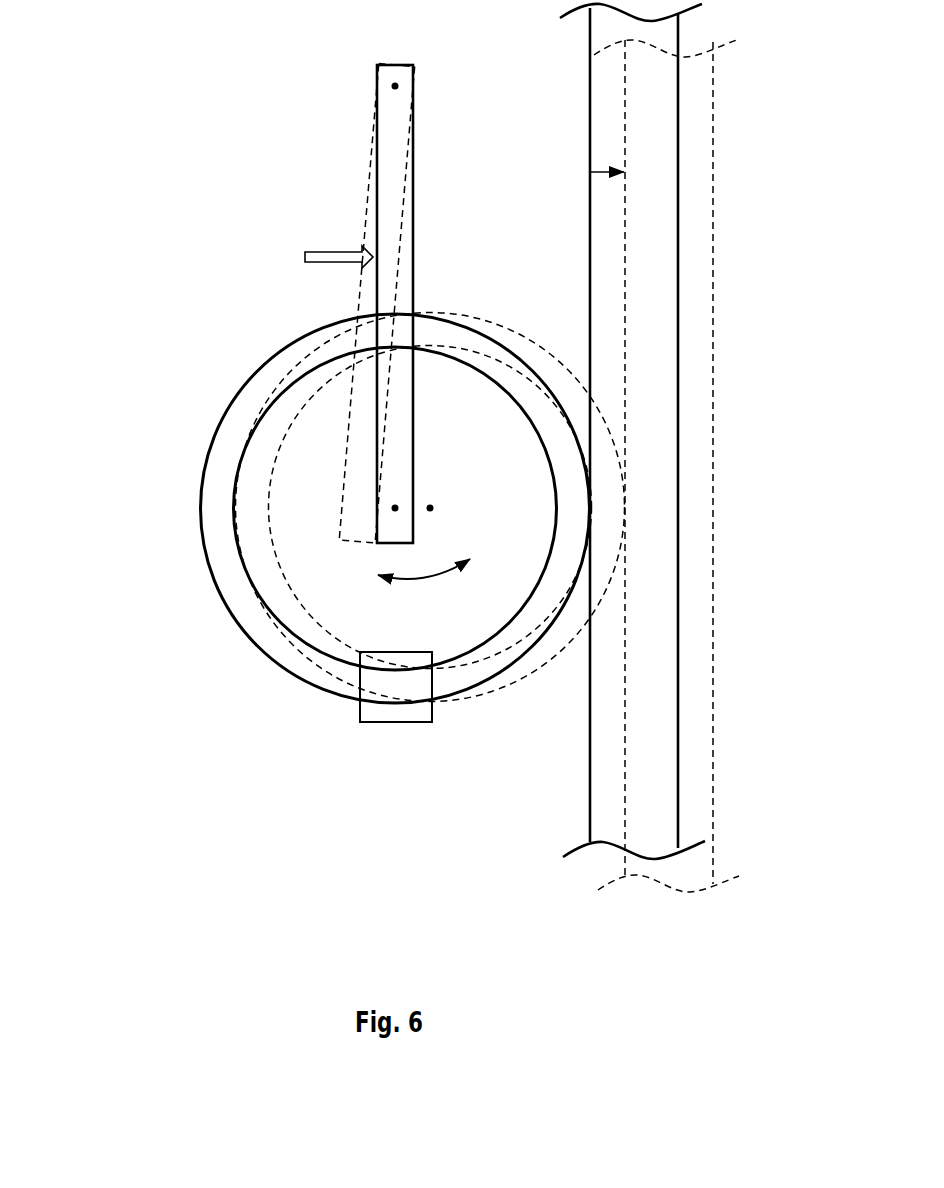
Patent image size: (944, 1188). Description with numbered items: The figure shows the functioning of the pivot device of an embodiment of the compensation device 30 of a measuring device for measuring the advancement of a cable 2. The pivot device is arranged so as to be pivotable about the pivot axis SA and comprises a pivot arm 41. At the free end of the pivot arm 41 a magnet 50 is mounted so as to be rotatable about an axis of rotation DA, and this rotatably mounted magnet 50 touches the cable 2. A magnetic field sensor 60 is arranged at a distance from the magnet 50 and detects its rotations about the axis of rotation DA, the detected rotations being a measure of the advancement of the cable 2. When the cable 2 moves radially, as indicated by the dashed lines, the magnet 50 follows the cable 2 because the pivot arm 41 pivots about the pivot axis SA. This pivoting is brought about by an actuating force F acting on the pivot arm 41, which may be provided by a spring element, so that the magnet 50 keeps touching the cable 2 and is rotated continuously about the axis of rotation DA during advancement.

The cable 2 is at (578, 84).
The compensation device 30 is at (340, 427).
The pivot arm 41 is at (372, 202).
The magnet 50 is at (230, 630).
The magnetic field sensor 60 is at (417, 727).
The pivot axis SA is at (386, 84).
The axis of rotation DA is at (386, 506).
The actuating force F is at (339, 247).